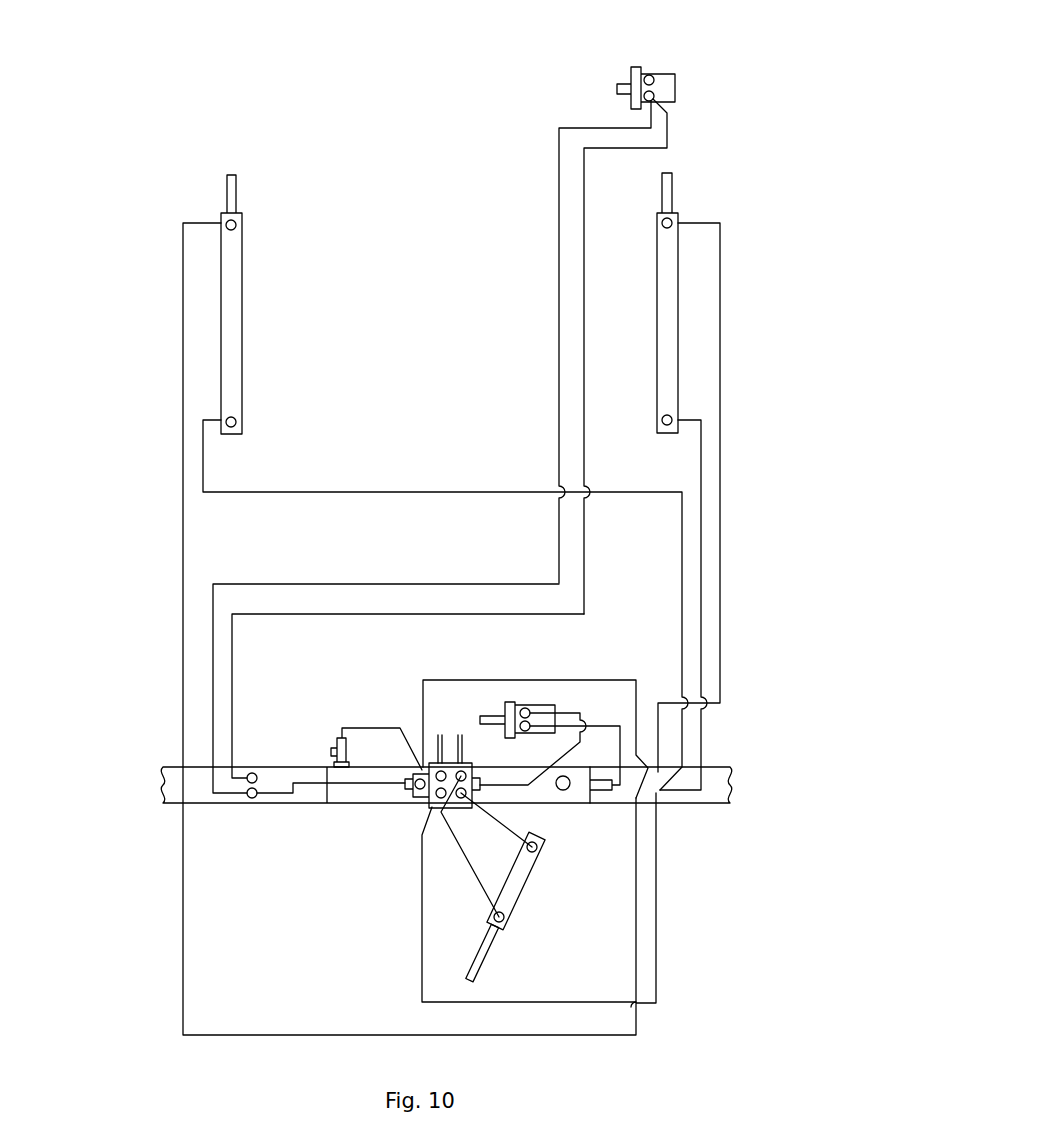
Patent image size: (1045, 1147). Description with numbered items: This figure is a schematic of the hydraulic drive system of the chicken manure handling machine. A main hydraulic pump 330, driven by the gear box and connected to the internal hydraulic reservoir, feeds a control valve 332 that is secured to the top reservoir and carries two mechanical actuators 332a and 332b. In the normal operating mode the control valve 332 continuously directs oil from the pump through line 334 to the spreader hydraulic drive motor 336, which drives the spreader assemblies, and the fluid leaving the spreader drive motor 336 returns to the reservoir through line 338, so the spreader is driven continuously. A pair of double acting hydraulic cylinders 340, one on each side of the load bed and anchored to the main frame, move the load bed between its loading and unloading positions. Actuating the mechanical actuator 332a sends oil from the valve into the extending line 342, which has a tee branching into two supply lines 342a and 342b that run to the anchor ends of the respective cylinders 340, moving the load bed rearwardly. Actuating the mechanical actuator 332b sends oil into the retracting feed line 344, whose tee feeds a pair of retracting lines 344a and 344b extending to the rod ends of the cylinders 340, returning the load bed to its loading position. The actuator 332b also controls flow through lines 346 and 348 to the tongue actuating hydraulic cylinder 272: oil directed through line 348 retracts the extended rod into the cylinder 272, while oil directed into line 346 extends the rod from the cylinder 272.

The spreader hydraulic drive motor 336 is at (668, 78).
The double acting hydraulic cylinders 340 is at (668, 328).
The retracting line 344a is at (235, 320).
The retracting line 344b is at (722, 320).
The extending line 342 is at (657, 948).
The supply line 342a is at (683, 556).
The supply line 342b is at (703, 442).
The line 334 is at (213, 590).
The line 338 is at (232, 650).
The retracting feed line 344 is at (636, 688).
The control valve 332 is at (430, 807).
The mechanical actuator 332a is at (440, 735).
The mechanical actuator 332b is at (460, 735).
The main hydraulic pump 330 is at (540, 705).
The line 346 is at (500, 818).
The line 348 is at (478, 877).
The tongue actuating hydraulic cylinder 272 is at (517, 878).